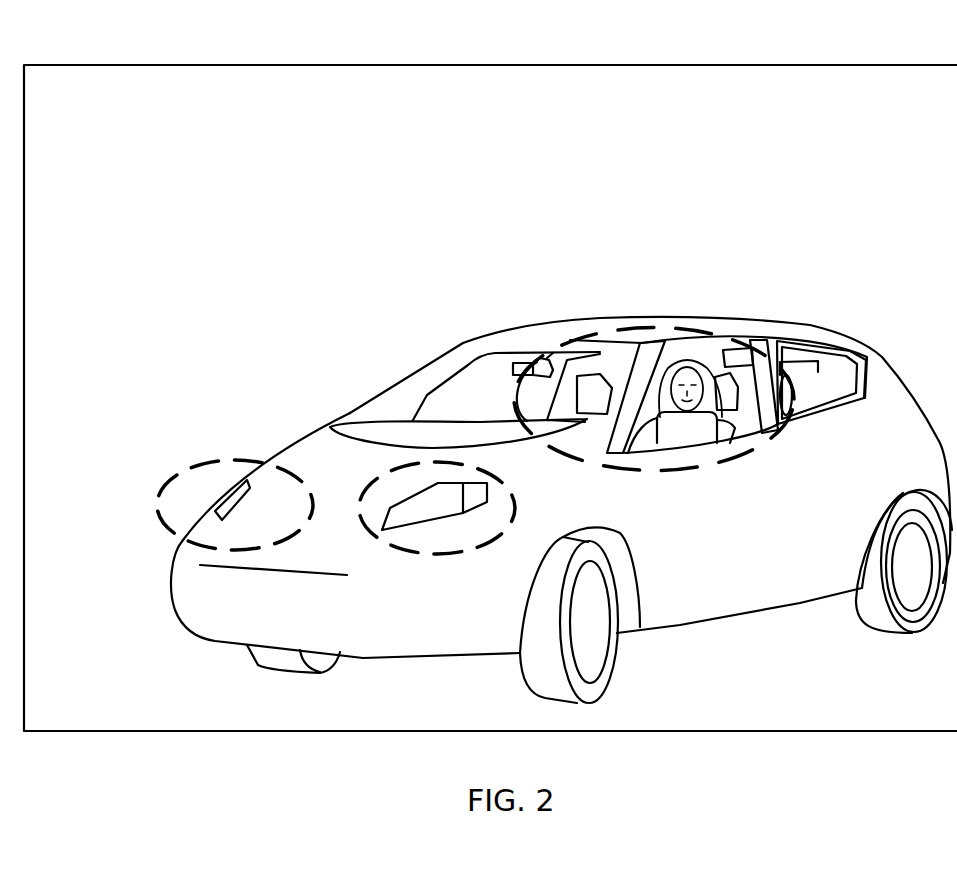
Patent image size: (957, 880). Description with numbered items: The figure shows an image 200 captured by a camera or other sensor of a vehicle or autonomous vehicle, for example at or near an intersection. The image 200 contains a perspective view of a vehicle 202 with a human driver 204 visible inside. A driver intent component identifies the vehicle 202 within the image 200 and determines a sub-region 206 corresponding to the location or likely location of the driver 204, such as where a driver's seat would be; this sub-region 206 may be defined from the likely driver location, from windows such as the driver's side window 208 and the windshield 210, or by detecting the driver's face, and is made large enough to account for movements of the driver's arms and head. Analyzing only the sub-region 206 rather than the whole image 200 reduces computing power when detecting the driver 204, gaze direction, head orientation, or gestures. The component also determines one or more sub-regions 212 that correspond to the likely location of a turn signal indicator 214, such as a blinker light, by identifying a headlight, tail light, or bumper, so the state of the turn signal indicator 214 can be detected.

The image 200 is at (126, 64).
The vehicle 202 is at (313, 440).
The human driver 204 is at (690, 363).
The sub-region 206 is at (583, 337).
The driver's side window 208 is at (738, 433).
The windshield 210 is at (403, 390).
The sub-regions 212 is at (183, 476).
The turn signal indicator 214 is at (477, 503).